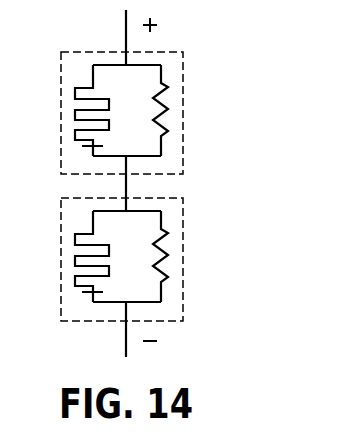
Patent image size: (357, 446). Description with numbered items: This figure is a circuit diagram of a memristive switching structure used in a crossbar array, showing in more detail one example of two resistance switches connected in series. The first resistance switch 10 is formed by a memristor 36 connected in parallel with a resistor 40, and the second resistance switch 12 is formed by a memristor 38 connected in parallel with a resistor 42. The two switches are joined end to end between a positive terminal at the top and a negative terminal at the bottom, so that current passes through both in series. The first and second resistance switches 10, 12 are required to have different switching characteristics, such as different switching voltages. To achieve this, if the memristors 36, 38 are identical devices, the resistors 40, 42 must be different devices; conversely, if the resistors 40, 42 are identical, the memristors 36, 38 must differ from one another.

The first resistance switch 10 is at (126, 113).
The second resistance switch 12 is at (126, 259).
The memristor 36 is at (75, 89).
The memristor 38 is at (75, 235).
The resistor 40 is at (168, 123).
The resistor 42 is at (168, 269).